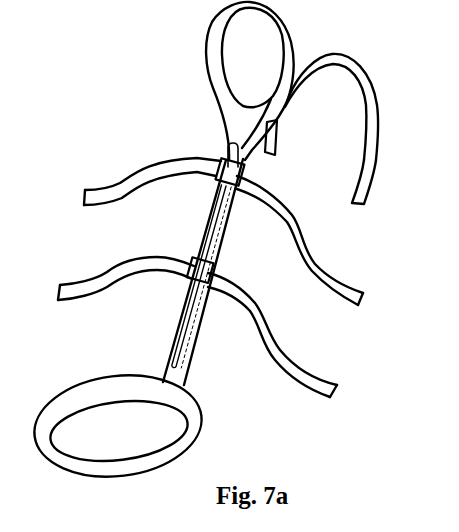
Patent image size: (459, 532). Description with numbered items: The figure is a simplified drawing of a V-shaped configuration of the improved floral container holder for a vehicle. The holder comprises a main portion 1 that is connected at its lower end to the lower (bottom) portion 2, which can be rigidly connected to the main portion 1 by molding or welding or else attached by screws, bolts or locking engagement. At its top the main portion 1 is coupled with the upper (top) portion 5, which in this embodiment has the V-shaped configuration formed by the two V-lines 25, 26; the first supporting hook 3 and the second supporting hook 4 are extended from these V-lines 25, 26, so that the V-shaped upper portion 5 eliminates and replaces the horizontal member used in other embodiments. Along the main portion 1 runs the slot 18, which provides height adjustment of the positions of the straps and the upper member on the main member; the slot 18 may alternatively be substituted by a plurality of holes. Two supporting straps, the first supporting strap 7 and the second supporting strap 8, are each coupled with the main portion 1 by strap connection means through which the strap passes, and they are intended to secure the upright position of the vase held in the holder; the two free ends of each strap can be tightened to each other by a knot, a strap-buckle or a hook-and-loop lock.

The main portion 1 is at (189, 272).
The lower (bottom) portion 2 is at (197, 425).
The first supporting hook 3 is at (361, 151).
The second supporting hook 4 is at (279, 130).
The upper (top) portion 5 is at (214, 84).
The first supporting strap 7 is at (303, 240).
The second supporting strap 8 is at (303, 368).
The slot 18 is at (183, 345).
The V-line 25 is at (218, 88).
The V-line 26 is at (331, 129).